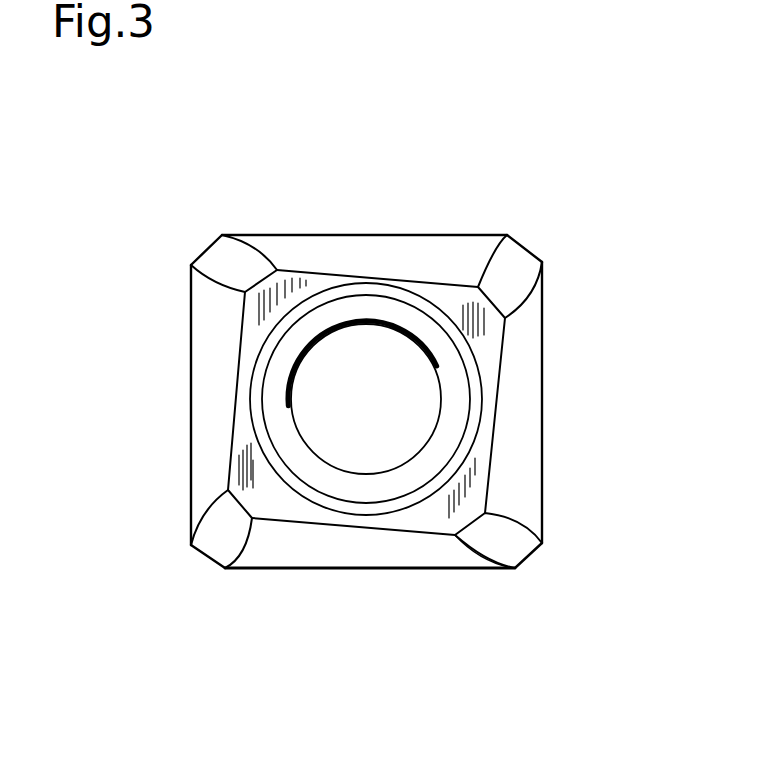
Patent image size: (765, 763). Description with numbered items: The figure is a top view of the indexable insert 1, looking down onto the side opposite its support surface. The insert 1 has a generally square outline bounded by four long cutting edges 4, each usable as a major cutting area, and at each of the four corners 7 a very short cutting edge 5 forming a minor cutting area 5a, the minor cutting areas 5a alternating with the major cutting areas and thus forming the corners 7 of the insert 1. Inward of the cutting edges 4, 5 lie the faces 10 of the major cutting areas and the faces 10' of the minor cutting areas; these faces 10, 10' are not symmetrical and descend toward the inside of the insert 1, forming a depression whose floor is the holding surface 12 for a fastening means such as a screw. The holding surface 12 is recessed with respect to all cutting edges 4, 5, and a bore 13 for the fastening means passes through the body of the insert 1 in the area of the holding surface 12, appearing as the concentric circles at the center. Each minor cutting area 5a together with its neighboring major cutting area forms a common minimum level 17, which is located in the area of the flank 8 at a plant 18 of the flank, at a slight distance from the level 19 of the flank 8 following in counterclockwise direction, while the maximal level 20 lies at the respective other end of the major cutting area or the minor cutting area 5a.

The indexable insert 1 is at (339, 208).
The cutting edge 4 is at (463, 235).
The cutting edge 5 is at (205, 238).
The minor cutting area 5a is at (178, 238).
The corner 7 is at (222, 235).
The flank 8 is at (545, 420).
The face 10 is at (353, 303).
The face 10' is at (238, 193).
The holding surface 12 is at (470, 490).
The bore 13 is at (417, 383).
The minimum level 17 is at (514, 570).
The plant of the flank 18 is at (411, 572).
The level of the flank 19 is at (545, 462).
The maximal level 20 is at (543, 543).